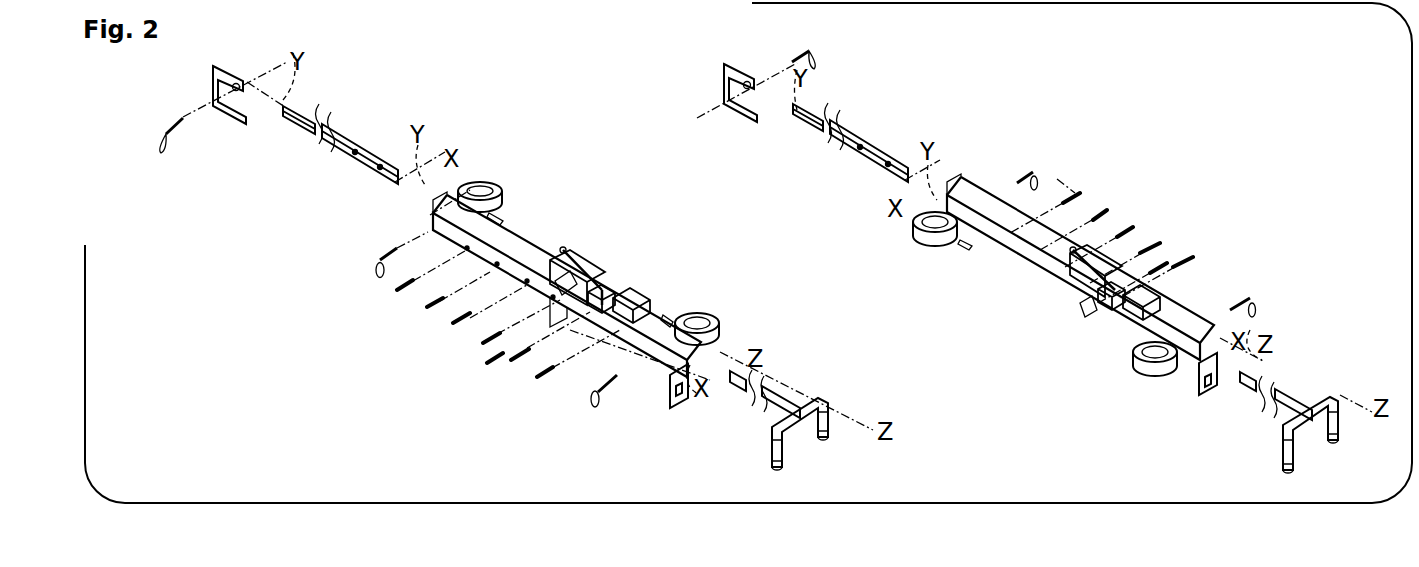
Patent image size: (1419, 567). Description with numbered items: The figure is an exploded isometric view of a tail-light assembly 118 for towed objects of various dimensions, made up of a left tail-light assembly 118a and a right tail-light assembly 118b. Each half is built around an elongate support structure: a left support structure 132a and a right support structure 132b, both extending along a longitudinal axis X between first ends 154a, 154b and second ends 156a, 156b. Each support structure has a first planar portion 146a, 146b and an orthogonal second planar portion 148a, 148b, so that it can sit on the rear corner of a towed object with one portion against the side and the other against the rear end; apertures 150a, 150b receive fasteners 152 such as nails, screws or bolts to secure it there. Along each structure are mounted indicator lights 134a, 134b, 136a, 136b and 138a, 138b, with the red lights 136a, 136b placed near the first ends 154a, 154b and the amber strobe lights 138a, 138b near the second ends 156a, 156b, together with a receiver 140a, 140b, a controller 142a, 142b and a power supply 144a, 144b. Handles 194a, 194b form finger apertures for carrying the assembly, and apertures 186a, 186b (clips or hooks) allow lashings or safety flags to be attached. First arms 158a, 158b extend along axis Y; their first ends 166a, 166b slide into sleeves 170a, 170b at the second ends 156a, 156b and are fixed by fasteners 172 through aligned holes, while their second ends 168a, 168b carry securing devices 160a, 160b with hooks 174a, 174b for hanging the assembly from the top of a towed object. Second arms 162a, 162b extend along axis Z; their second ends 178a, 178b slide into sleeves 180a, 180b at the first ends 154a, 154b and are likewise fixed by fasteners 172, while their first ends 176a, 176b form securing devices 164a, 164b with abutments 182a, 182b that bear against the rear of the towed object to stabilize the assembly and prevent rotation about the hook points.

The tail-light assembly 118 is at (1277, 68).
The left tail-light assembly 118a is at (365, 397).
The right tail-light assembly 118b is at (1257, 145).
The left support structure 132a is at (533, 216).
The right support structure 132b is at (1030, 313).
The indicator light 134a is at (673, 405).
The indicator light 134b is at (1200, 393).
The indicator light 136a is at (705, 323).
The indicator light 136b is at (1160, 357).
The indicator light 138a is at (478, 188).
The indicator light 138b is at (923, 227).
The receiver 140a is at (580, 262).
The receiver 140b is at (1097, 257).
The controller 142a is at (600, 293).
The controller 142b is at (1117, 303).
The power supply 144a is at (640, 300).
The power supply 144b is at (1137, 307).
The first planar portion 146a is at (653, 367).
The first planar portion 146b is at (1220, 380).
The second planar portion 148a is at (537, 250).
The second planar portion 148b is at (1003, 250).
The apertures 150a is at (540, 363).
The apertures 150b is at (1073, 169).
The fasteners 152 is at (455, 320).
The first end 154a is at (727, 340).
The first end 154b is at (1190, 383).
The second end 156a is at (447, 140).
The second end 156b is at (943, 173).
The first arm 158a is at (330, 95).
The first arm 158b is at (873, 115).
The securing device 160a is at (232, 50).
The securing device 160b is at (703, 85).
The second arm 162a is at (803, 393).
The second arm 162b is at (1293, 340).
The securing device 164a is at (835, 415).
The securing device 164b is at (1337, 387).
The first end 166a is at (392, 192).
The first end 166b is at (900, 187).
The second end 168a is at (283, 115).
The second end 168b is at (787, 107).
The sleeve 170a is at (430, 215).
The sleeve 170b is at (963, 200).
The fasteners 172 is at (380, 268).
The hook 174a is at (213, 120).
The hook 174b is at (730, 120).
The first end 176a is at (793, 452).
The first end 176b is at (1300, 437).
The second end 178a is at (727, 373).
The second end 178b is at (1257, 377).
The sleeve 180a is at (593, 360).
The sleeve 180b is at (1210, 287).
The abutments 182a is at (773, 465).
The abutments 182b is at (1340, 437).
The aperture 186a is at (492, 212).
The aperture 186b is at (960, 243).
The handle 194a is at (566, 252).
The handle 194b is at (1110, 253).